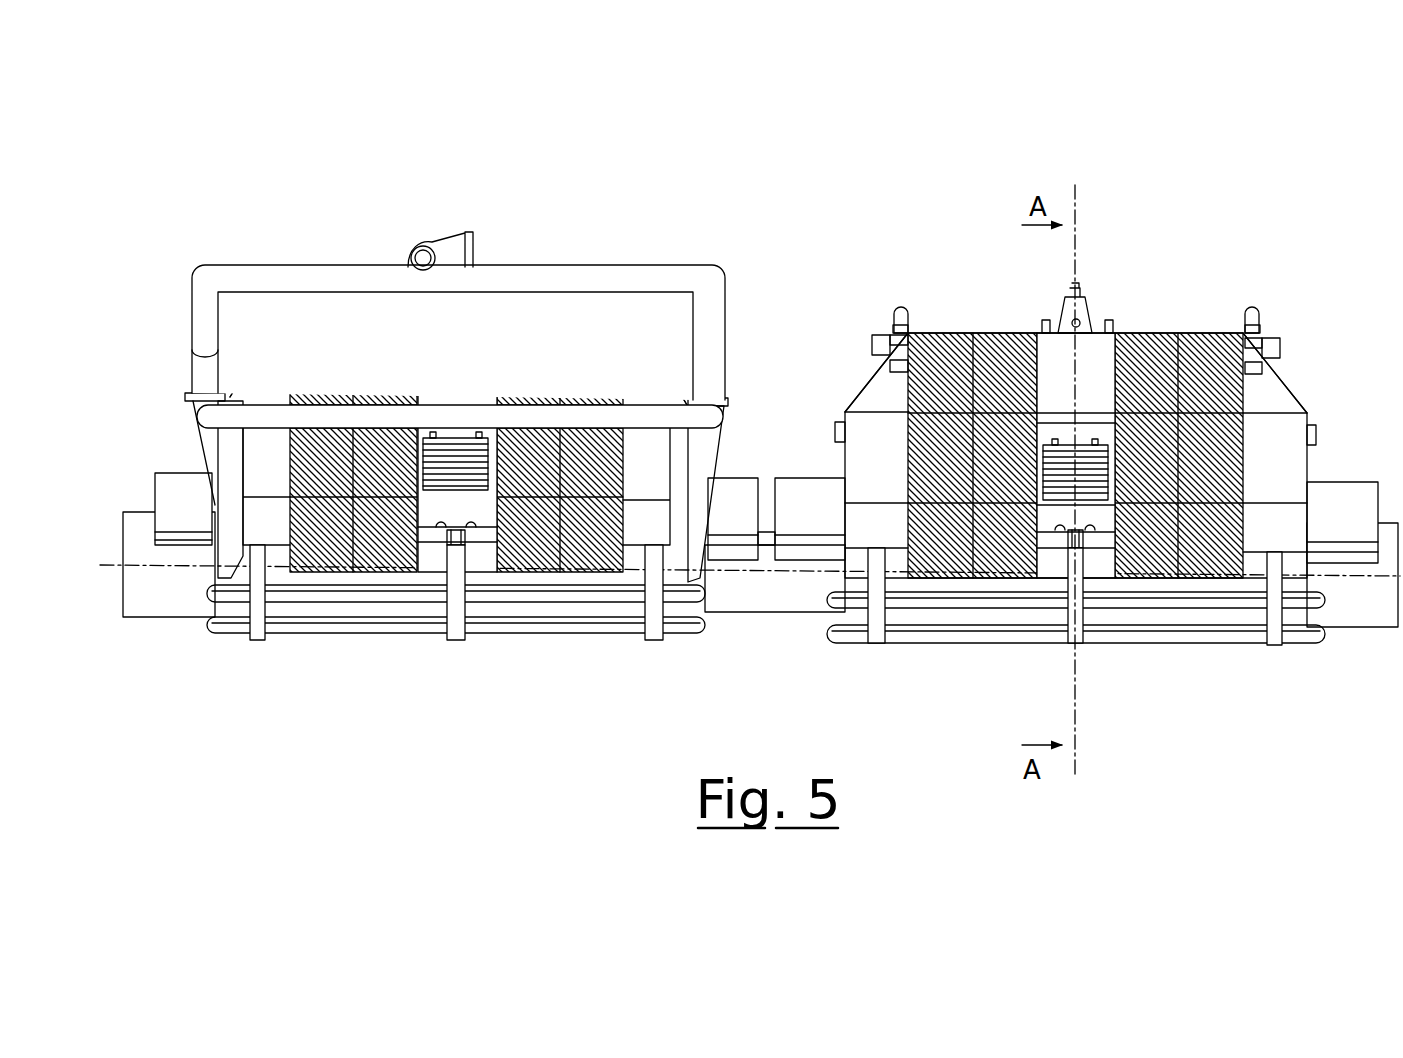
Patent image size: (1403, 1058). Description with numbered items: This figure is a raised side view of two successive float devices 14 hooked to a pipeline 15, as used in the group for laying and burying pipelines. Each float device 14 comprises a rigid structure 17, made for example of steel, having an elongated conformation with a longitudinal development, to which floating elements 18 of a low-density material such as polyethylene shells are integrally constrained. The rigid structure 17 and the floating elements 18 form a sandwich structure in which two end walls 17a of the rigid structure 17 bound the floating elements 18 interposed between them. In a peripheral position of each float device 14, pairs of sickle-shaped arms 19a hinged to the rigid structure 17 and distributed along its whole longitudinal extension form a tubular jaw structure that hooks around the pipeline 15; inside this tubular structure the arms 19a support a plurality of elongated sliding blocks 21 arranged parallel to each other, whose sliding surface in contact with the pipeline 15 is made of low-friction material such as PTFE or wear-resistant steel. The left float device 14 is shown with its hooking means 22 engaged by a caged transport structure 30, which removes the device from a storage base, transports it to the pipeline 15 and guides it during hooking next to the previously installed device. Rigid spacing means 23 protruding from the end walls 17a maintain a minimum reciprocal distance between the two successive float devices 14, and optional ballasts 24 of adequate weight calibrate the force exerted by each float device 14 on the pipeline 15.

The float device 14 is at (428, 170).
The pipeline 15 is at (170, 600).
The rigid structure 17 is at (470, 345).
The end walls 17a is at (262, 378).
The floating element 18 is at (330, 360).
The sickle-shaped arm 19a is at (253, 634).
The sliding block 21 is at (348, 625).
The hooking means 22 is at (488, 238).
The rigid spacing means 23 is at (172, 490).
The ballast 24 is at (488, 445).
The caged transport structure 30 is at (368, 280).